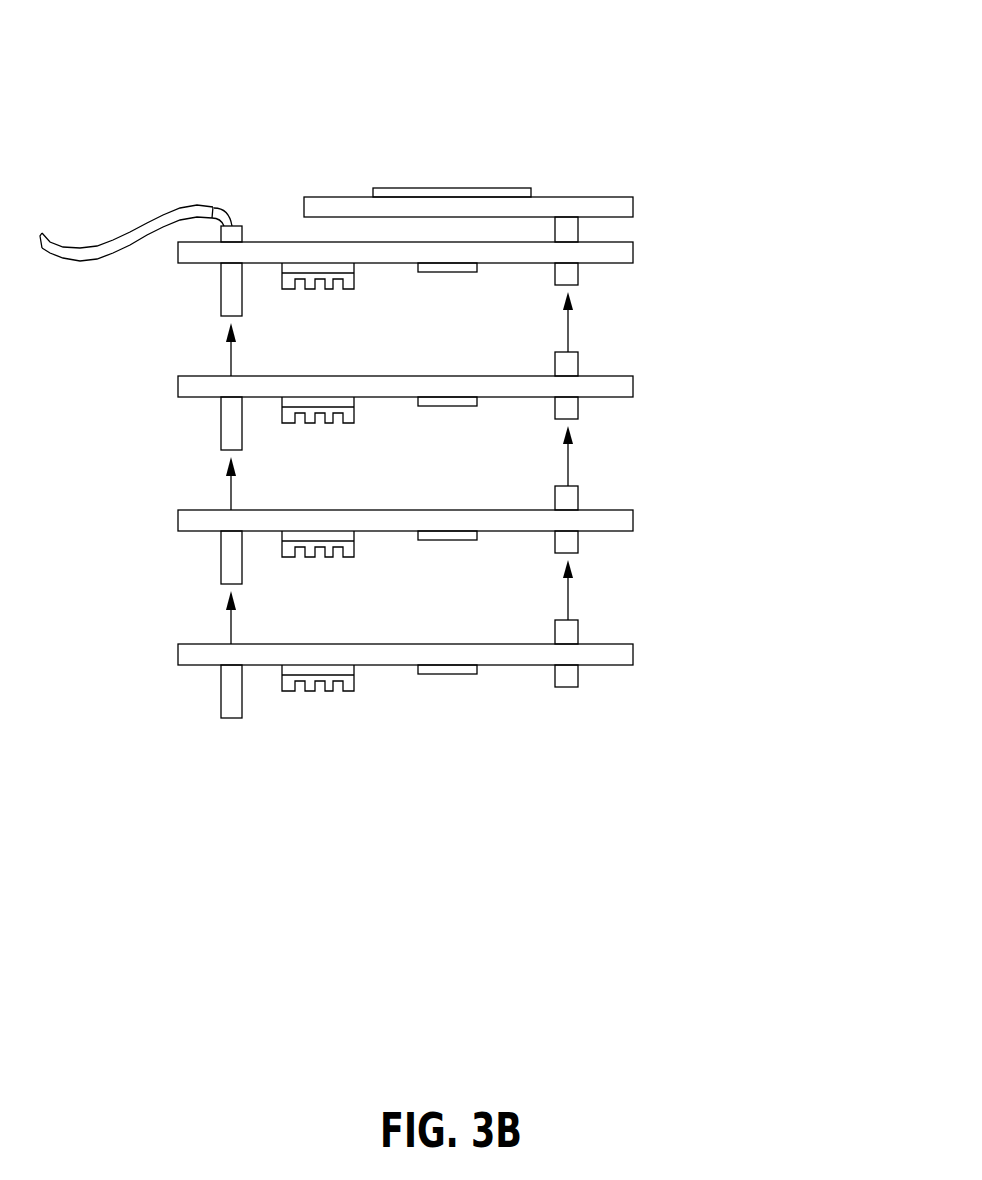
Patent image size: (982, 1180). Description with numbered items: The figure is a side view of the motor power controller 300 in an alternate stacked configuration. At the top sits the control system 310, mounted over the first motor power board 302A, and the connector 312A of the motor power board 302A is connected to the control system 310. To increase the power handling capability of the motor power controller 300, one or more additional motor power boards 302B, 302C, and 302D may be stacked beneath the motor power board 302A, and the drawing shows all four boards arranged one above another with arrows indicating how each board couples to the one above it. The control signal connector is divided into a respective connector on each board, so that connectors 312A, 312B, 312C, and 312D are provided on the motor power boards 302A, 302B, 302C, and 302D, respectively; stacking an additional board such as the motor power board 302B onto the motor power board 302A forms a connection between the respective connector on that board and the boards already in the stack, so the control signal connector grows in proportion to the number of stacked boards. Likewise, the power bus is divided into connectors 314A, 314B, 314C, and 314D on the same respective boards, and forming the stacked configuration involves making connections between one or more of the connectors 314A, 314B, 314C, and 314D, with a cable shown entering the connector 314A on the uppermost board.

The motor power controller 300 is at (772, 64).
The control system 310 is at (483, 186).
The motor power board 302A is at (633, 253).
The motor power board 302B is at (633, 387).
The motor power board 302C is at (633, 521).
The motor power board 302D is at (633, 655).
The connector 312A is at (578, 282).
The connector 312B is at (578, 416).
The connector 312C is at (578, 550).
The connector 312D is at (578, 684).
The connector 314A is at (219, 309).
The connector 314B is at (219, 443).
The connector 314C is at (219, 577).
The connector 314D is at (219, 711).